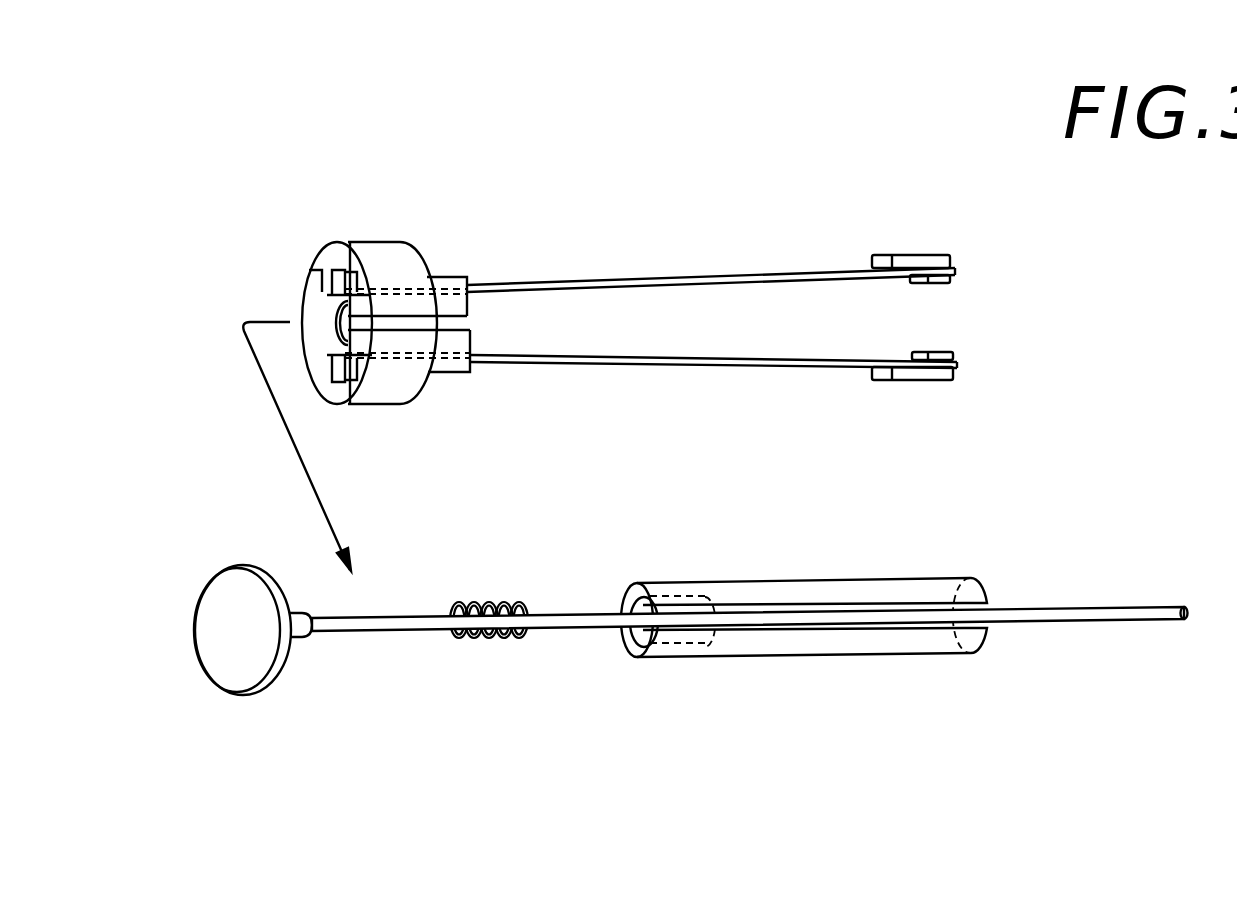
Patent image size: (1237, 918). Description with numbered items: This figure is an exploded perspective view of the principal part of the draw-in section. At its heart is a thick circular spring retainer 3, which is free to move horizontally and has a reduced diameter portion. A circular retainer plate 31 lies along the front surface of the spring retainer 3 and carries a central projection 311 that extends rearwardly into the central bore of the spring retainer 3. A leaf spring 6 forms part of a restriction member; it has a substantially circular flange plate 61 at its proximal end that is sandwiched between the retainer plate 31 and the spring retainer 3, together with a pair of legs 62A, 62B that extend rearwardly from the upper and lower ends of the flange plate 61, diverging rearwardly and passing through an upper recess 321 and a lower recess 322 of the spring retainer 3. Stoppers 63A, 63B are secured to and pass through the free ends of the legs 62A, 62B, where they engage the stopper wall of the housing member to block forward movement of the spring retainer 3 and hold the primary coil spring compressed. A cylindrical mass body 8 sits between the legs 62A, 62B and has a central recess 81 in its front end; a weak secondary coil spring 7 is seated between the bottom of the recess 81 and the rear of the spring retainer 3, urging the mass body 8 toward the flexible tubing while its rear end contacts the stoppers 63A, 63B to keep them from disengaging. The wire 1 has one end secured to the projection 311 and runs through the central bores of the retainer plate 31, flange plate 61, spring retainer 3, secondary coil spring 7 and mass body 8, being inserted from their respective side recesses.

The wire 1 is at (572, 632).
The spring retainer 3 is at (403, 257).
The leaf spring 6 is at (690, 260).
The secondary coil spring 7 is at (487, 640).
The mass body 8 is at (820, 650).
The retainer plate 31 is at (230, 584).
The flange plate 61 is at (320, 292).
The central recess 81 is at (633, 658).
The central projection 311 is at (298, 640).
The upper recess 321 is at (362, 258).
The lower recess 322 is at (362, 388).
The upper leg 62A is at (590, 285).
The lower leg 62B is at (588, 365).
The stopper 63A is at (912, 255).
The stopper 63B is at (915, 385).